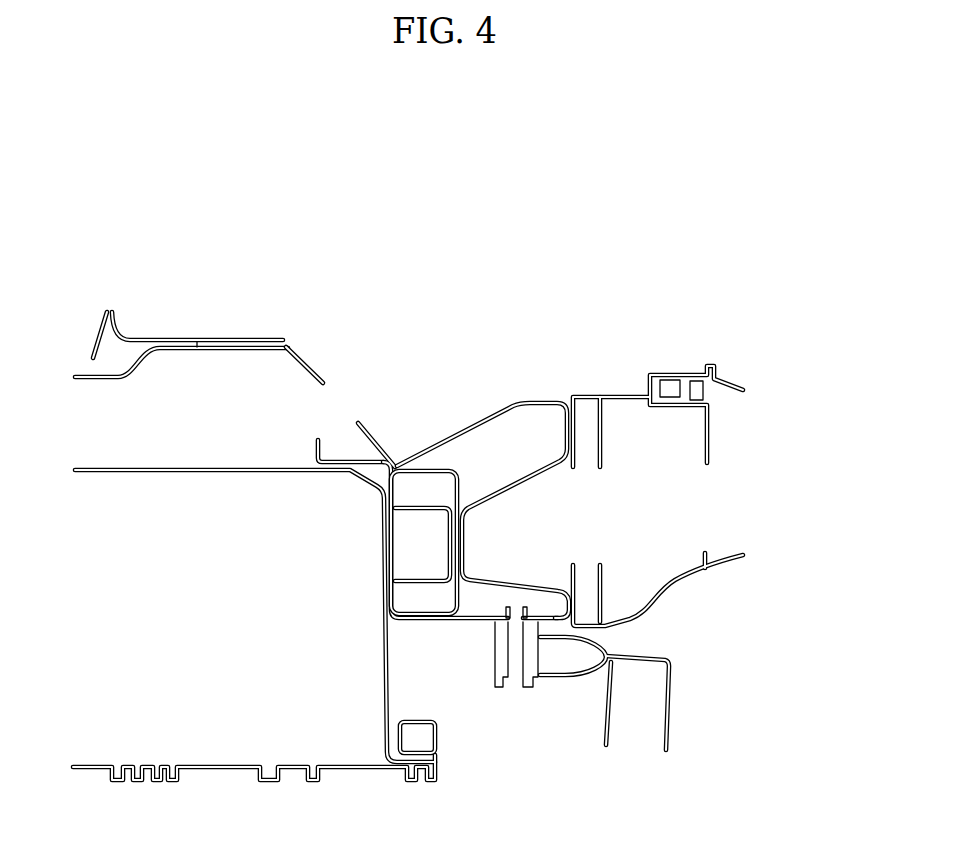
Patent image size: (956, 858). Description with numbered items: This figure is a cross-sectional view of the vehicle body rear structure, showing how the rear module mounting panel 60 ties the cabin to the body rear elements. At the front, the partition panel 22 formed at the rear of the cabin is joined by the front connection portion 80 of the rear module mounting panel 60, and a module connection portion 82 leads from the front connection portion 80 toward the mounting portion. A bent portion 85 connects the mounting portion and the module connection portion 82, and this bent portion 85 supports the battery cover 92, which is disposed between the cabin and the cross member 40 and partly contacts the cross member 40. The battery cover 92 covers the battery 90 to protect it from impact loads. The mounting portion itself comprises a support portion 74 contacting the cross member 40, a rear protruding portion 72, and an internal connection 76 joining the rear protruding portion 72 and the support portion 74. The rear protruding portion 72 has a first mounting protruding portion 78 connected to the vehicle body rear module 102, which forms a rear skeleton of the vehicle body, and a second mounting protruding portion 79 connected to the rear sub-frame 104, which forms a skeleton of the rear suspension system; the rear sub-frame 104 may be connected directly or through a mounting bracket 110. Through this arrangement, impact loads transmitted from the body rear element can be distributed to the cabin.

The partition panel 22 is at (148, 338).
The front connection portion 80 is at (238, 345).
The module connection portion 82 is at (325, 377).
The battery cover 92 is at (315, 446).
The bent portion 85 is at (400, 466).
The rear module mounting panel 60 is at (449, 412).
The cross member 40 is at (414, 531).
The support portion 74 is at (458, 544).
The internal connection 76 is at (497, 488).
The rear protruding portion 72 is at (646, 496).
The first mounting protruding portion 78 is at (572, 436).
The second mounting protruding portion 79 is at (568, 600).
The vehicle body rear module 102 is at (733, 504).
The rear sub-frame 104 is at (689, 712).
The mounting bracket 110 is at (515, 708).
The battery 90 is at (305, 740).